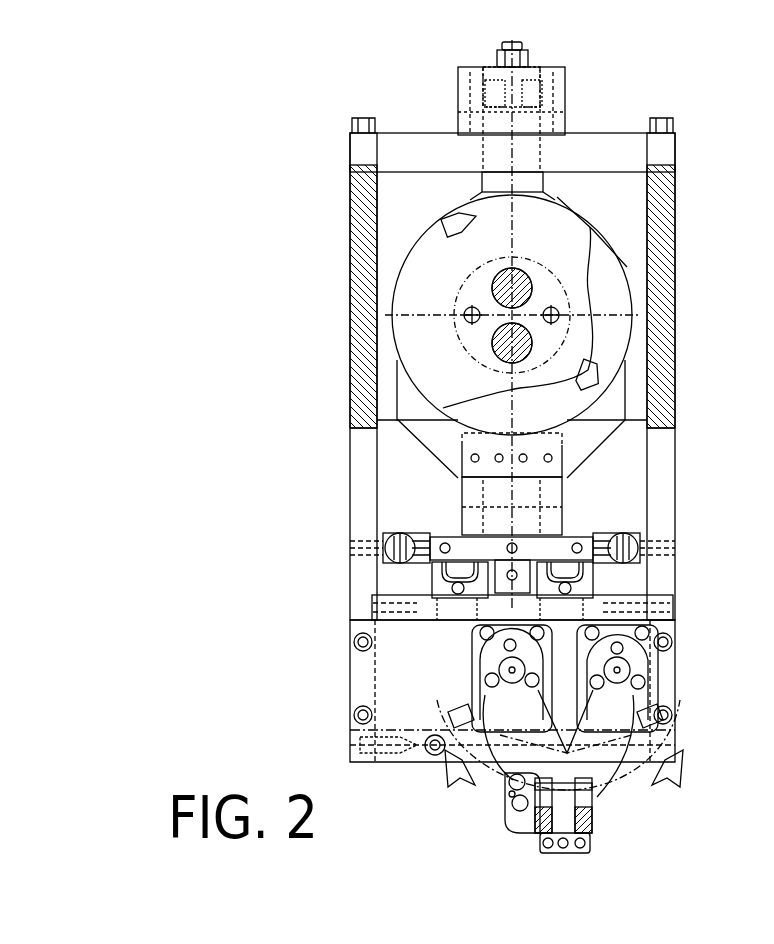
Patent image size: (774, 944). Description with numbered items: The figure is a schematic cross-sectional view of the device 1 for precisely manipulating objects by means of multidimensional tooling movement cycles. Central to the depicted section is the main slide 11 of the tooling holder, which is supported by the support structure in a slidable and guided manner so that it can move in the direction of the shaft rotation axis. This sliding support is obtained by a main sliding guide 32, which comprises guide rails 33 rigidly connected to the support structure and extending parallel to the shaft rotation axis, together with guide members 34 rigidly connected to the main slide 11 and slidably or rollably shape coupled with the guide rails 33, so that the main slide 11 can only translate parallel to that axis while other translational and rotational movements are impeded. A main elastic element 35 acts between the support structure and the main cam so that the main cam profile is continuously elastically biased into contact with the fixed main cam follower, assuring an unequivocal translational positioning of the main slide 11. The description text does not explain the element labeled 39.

The device 1 is at (716, 153).
The main slide 11 is at (573, 533).
The main sliding guide 32 is at (603, 578).
The guide rails 33 is at (432, 568).
The guide members 34 is at (462, 535).
The main elastic element 35 is at (620, 535).
The frame column 39 is at (710, 369).